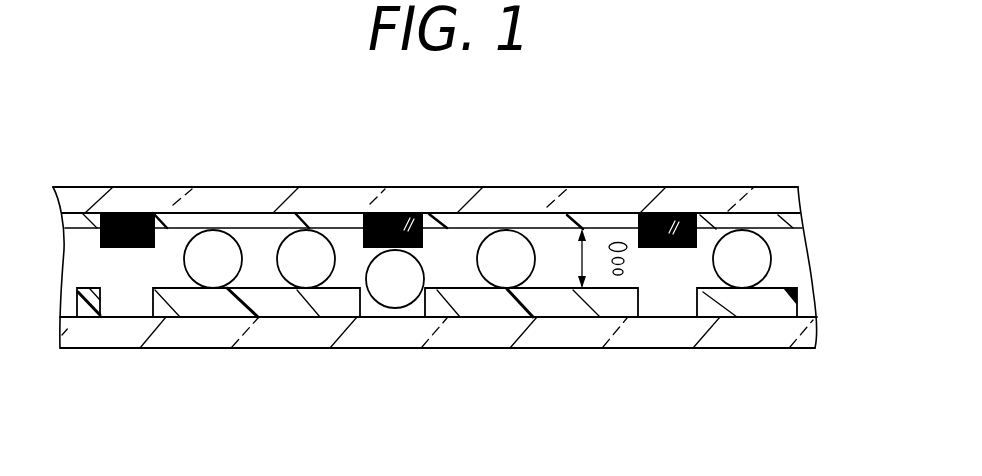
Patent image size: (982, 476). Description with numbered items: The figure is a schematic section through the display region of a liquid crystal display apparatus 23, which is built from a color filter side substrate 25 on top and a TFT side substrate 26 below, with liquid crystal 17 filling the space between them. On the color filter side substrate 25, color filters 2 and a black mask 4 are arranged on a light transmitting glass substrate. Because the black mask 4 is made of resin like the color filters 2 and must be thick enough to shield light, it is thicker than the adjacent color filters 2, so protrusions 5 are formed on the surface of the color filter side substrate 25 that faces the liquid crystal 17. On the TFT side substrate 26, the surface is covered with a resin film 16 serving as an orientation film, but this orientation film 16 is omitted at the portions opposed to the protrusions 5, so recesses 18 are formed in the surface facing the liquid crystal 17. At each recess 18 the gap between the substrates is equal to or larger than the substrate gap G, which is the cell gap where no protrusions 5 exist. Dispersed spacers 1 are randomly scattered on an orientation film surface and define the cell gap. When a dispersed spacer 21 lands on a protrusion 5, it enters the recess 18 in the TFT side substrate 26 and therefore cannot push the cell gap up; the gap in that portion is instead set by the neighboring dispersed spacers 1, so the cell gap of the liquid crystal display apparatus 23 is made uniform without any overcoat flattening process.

The liquid crystal display apparatus 23 is at (136, 131).
The color filter side substrate 25 is at (819, 186).
The TFT side substrate 26 is at (819, 287).
The color filters 2 is at (208, 220).
The black mask 4 is at (407, 227).
The dispersed spacers 1 is at (217, 273).
The dispersed spacer 21 is at (385, 292).
The liquid crystal 17 is at (543, 250).
The substrate gap G is at (583, 262).
The resin film 16 is at (275, 303).
The recesses 18 is at (125, 303).
The protrusions 5 is at (664, 262).